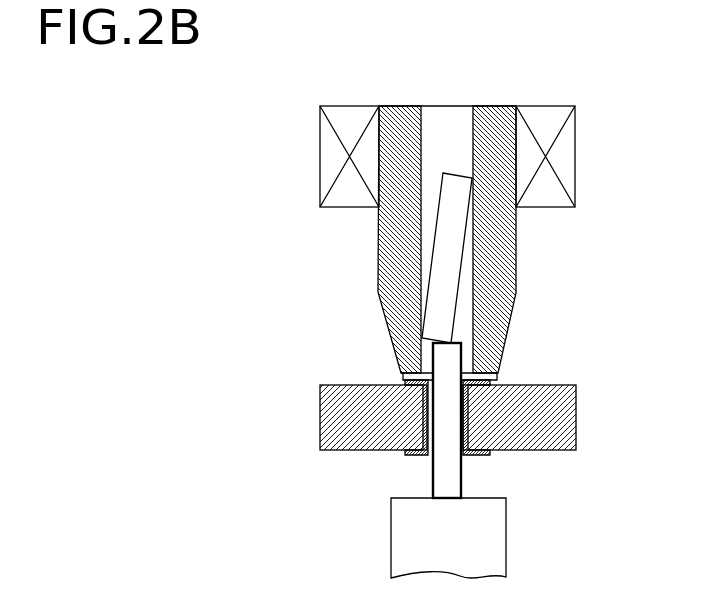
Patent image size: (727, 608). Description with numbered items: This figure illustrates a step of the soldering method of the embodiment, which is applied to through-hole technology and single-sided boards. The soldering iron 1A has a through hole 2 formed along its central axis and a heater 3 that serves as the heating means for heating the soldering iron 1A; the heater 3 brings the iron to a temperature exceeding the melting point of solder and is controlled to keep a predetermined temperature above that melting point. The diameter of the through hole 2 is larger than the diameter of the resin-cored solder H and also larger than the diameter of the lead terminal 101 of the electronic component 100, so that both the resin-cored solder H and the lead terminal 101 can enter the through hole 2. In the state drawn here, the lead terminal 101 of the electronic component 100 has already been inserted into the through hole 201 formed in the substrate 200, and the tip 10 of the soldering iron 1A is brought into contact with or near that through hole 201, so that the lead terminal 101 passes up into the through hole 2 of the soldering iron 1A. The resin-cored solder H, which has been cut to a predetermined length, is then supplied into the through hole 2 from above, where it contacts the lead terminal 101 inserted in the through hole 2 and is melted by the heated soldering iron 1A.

The soldering iron 1A is at (462, 239).
The through hole 2 is at (475, 268).
The heater 3 is at (575, 182).
The tip 10 is at (500, 357).
The electronic component 100 is at (507, 527).
The lead terminal 101 is at (440, 360).
The substrate 200 is at (318, 413).
The through hole 201 is at (485, 380).
The resin-cored solder H is at (435, 285).